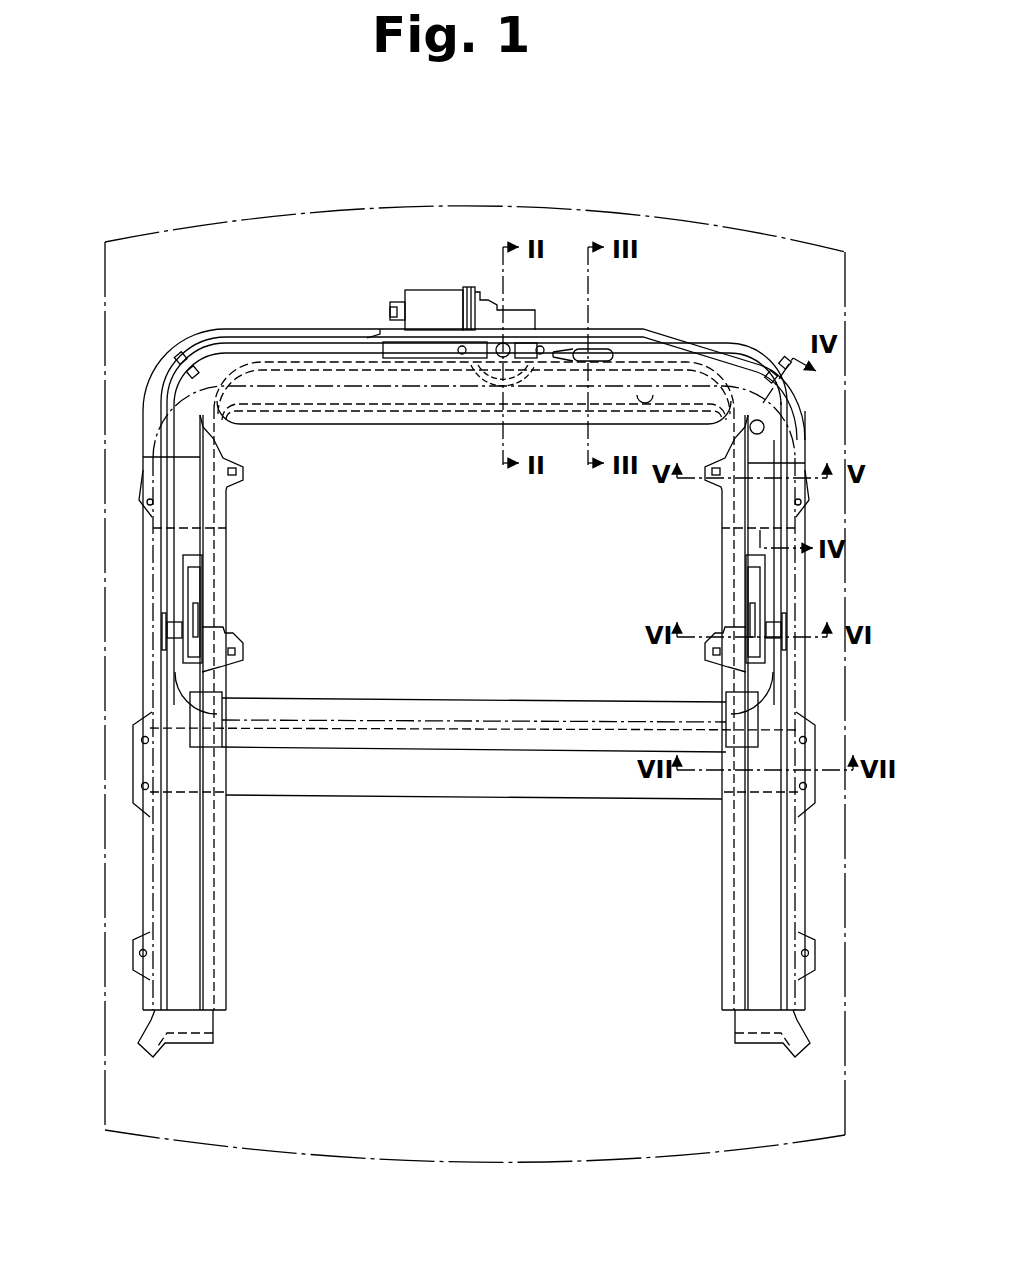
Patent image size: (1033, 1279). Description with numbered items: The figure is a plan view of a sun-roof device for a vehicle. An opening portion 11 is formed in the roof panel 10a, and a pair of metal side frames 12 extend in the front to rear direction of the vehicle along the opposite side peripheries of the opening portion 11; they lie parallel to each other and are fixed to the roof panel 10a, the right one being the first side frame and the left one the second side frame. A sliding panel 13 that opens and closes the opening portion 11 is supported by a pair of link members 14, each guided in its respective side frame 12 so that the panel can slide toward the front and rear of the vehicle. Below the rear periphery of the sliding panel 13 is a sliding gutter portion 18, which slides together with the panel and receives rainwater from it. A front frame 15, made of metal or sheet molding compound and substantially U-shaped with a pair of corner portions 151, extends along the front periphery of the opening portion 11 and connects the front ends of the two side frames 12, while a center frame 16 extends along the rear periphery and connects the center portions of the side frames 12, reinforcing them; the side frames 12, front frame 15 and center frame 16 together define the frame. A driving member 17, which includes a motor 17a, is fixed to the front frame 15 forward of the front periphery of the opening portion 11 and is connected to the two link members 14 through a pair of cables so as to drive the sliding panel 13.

The roof panel 10a is at (313, 273).
The opening portion 11 is at (647, 395).
The side frame 12 is at (146, 564).
The sliding panel 13 is at (253, 433).
The link member 14 is at (194, 598).
The front frame 15 is at (393, 424).
The corner portion 151 is at (160, 397).
The center frame 16 is at (407, 788).
The driving member 17 is at (524, 297).
The motor 17a is at (432, 300).
The sliding gutter portion 18 is at (390, 707).